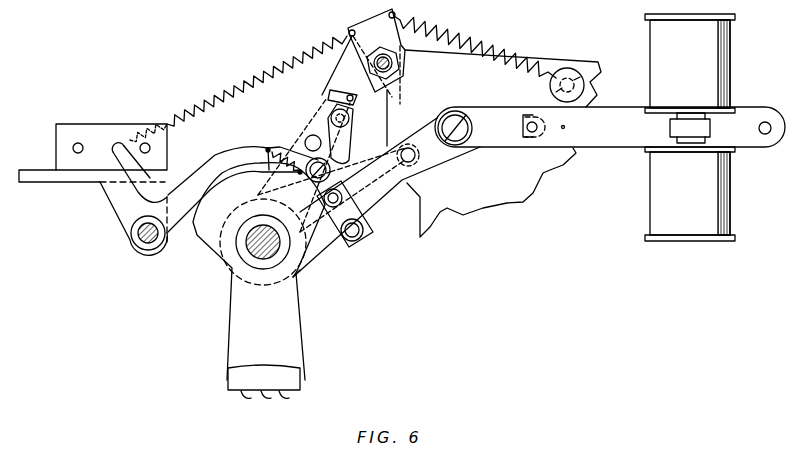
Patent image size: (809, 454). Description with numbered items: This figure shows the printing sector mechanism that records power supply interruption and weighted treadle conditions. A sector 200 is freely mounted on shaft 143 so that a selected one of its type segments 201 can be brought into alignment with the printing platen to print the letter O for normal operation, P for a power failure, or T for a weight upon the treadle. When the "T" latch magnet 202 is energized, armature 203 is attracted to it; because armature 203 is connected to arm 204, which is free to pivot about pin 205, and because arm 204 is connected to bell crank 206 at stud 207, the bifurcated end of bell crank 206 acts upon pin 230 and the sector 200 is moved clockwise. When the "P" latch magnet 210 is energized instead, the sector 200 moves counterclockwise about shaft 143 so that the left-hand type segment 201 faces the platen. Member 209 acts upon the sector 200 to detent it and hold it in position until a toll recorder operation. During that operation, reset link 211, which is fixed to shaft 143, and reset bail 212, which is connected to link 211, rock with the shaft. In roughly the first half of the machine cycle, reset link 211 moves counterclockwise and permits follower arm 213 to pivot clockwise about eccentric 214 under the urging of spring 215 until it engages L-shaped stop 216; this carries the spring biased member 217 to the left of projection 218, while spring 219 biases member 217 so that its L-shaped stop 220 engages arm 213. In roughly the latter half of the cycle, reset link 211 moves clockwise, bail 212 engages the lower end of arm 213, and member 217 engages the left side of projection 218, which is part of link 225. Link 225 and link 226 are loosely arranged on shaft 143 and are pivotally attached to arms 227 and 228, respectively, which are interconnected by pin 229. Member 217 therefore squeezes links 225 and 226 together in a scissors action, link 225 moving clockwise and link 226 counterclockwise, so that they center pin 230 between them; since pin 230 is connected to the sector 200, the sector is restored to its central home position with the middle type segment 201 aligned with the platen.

The shaft 143 is at (250, 250).
The sector 200 is at (300, 318).
The type segments 201 is at (245, 395).
The "T" latch magnet 202 is at (735, 50).
The armature 203 is at (670, 127).
The arm 204 is at (616, 148).
The pin 205 is at (768, 134).
The bell crank 206 is at (483, 150).
The stud 207 is at (526, 127).
The member 209 is at (218, 158).
The "P" latch magnet 210 is at (655, 190).
The reset link 211 is at (300, 152).
The reset bail 212 is at (312, 135).
The follower arm 213 is at (352, 73).
The eccentric 214 is at (400, 66).
The spring 215 is at (488, 48).
The L-shaped stop 216 is at (421, 28).
The spring biased member 217 is at (347, 150).
The projection 218 is at (312, 179).
The spring 219 is at (386, 100).
The L-shaped stop 220 is at (330, 93).
The link 225 is at (300, 276).
The link 226 is at (350, 243).
The arm 227 is at (333, 158).
The arm 228 is at (375, 207).
The pin 229 is at (415, 162).
The pin 230 is at (335, 215).